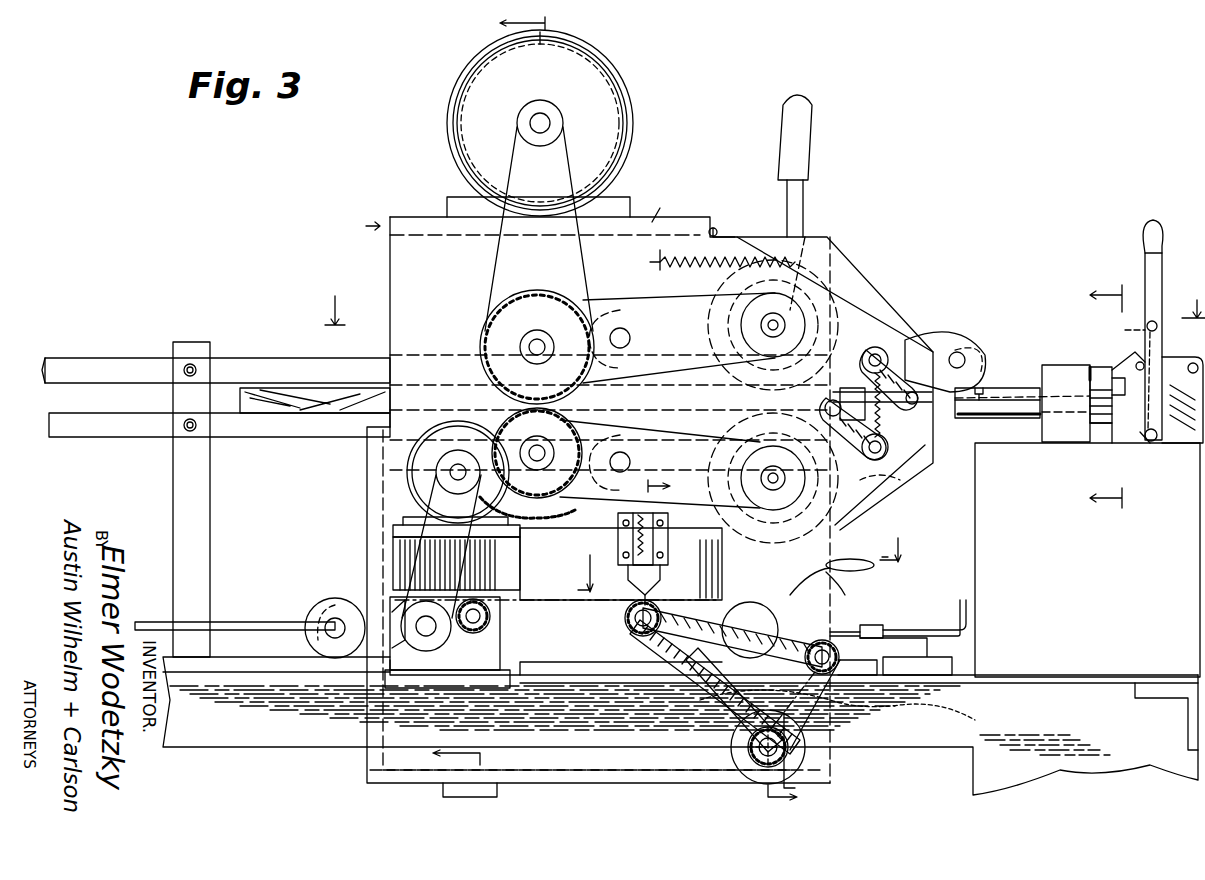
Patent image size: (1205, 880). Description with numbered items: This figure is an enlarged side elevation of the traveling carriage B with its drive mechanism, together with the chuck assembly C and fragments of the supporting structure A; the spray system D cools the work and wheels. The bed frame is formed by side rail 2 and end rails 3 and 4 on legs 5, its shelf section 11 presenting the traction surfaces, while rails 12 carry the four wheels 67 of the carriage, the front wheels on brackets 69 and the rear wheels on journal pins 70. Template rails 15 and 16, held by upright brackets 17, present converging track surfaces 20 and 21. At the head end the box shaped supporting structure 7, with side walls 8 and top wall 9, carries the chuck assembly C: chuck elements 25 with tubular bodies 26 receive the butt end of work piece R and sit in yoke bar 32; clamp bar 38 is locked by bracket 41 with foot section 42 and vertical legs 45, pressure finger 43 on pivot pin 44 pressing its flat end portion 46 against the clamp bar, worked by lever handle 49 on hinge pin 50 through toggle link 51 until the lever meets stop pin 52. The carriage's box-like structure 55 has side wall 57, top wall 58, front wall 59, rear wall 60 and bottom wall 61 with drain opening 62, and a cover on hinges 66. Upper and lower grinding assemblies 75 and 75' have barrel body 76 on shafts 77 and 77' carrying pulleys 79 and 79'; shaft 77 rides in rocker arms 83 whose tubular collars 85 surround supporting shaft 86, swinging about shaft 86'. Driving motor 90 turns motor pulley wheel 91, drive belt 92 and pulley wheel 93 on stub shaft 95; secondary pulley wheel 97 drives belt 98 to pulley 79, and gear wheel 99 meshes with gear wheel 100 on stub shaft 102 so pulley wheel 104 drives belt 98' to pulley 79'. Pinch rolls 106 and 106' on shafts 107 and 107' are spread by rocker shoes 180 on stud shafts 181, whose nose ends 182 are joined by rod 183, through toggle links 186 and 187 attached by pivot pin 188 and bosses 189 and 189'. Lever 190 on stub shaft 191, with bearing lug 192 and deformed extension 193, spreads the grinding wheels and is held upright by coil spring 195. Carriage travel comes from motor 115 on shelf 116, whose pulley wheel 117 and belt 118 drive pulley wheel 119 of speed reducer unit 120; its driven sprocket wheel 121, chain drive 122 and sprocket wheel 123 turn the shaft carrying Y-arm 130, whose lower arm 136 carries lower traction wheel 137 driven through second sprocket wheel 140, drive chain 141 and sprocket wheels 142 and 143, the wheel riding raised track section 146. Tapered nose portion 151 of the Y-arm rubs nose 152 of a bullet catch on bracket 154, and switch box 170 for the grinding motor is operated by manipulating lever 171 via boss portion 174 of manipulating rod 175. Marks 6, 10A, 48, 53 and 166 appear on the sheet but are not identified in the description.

The side rail 2 is at (318, 745).
The end rail 3 is at (1185, 730).
The end rail 4 is at (489, 394).
The legs 5 is at (975, 776).
The section line 6 is at (759, 306).
The box shaped supporting structure 7 is at (1110, 625).
The vertical side walls 8 is at (975, 568).
The horizontal top wall 9 is at (1015, 450).
The section line 10A is at (741, 640).
The shelf section 11 is at (238, 690).
The rails 12 is at (272, 645).
The template rail 15 is at (115, 358).
The template rail 16 is at (128, 407).
The upright brackets 17 is at (196, 345).
The track surface 20 is at (325, 360).
The track surface 21 is at (288, 435).
The chuck element 25 is at (995, 388).
The tubular body 26 is at (988, 420).
The yoke bar 32 is at (1055, 372).
The clamp bar 38 is at (1105, 370).
The bracket 41 is at (1163, 455).
The foot section 42 is at (1192, 450).
The pressure finger 43 is at (1170, 357).
The pivot pin 44 is at (1190, 375).
The vertical legs 45 is at (1178, 445).
The flat end portion 46 is at (1088, 360).
The shaft 48 is at (338, 635).
The lever handle 49 is at (1162, 262).
The hinge pin 50 is at (1146, 445).
The toggle link 51 is at (1130, 374).
The stop pin 52 is at (1130, 400).
The support 53 is at (1100, 455).
The box-like structure 55 is at (362, 481).
The side wall 57 is at (661, 363).
The top wall 58 is at (663, 206).
The front wall 59 is at (368, 493).
The rear wall 60 is at (940, 457).
The bottom wall 61 is at (648, 782).
The drain opening 62 is at (520, 780).
The hinges 66 is at (715, 228).
The wheels 67 is at (330, 600).
The brackets 69 is at (365, 575).
The journal pin 70 is at (735, 635).
The upper grinding assembly 75 is at (835, 282).
The lower grinding assembly 75' is at (819, 468).
The barrel body 76 is at (805, 240).
The shaft 77 is at (773, 321).
The shaft 77' is at (773, 481).
The driving pulley 79 is at (766, 318).
The pulley wheel 79' is at (771, 491).
The rocker arms 83 is at (680, 300).
The tubular collar 85 is at (605, 491).
The supporting shaft 86 is at (624, 339).
The shaft 86' is at (626, 462).
The driving motor 90 is at (540, 123).
The motor pulley wheel 91 is at (552, 122).
The drive belt 92 is at (568, 152).
The pulley wheel 93 is at (520, 300).
The stub shaft 95 is at (548, 345).
The secondary pulley wheel 97 is at (480, 337).
The belt 98 is at (679, 325).
The belt 98' is at (660, 451).
The gear wheel 99 is at (480, 308).
The gear wheel 100 is at (560, 515).
The stub shaft 102 is at (540, 437).
The pulley wheel 104 is at (560, 487).
The pinch roll 106 is at (963, 321).
The pinch roll 106' is at (945, 506).
The shaft 107 is at (883, 314).
The shaft 107' is at (920, 457).
The motor 115 is at (458, 472).
The shelf 116 is at (393, 532).
The pulley wheel 117 is at (440, 480).
The belt 118 is at (460, 560).
The pulley wheel 119 is at (394, 612).
The speed reducer unit 120 is at (447, 642).
The driven sprocket wheel 121 is at (490, 616).
The chain drive 122 is at (550, 588).
The sprocket wheel 123 is at (625, 615).
The Y-arm 130 is at (683, 695).
The lower arm 136 is at (700, 718).
The lower traction wheel 137 is at (805, 760).
The second sprocket wheel 140 is at (635, 630).
The drive chain 141 is at (830, 745).
The sprocket wheel 142 is at (755, 758).
The sprocket wheel 143 is at (835, 640).
The raised track section 146 is at (855, 700).
The tapered nose portion 151 is at (660, 588).
The nose 152 is at (663, 578).
The bracket 154 is at (618, 545).
The lever 166 is at (850, 572).
The switch box 170 is at (955, 668).
The manipulating lever 171 is at (932, 650).
The boss portion 174 is at (885, 620).
The manipulating rod 175 is at (250, 607).
The rocker shoes 180 is at (950, 345).
The stud shafts 181 is at (935, 345).
The nose ends 182 is at (975, 340).
The transversely extending rod 183 is at (975, 358).
The toggle link 186 is at (905, 352).
The toggle link 187 is at (915, 515).
The pivot pin 188 is at (835, 388).
The tubular boss 189 is at (914, 310).
The boss portion 189' is at (947, 489).
The manually manipulated lever 190 is at (812, 130).
The stub shaft 191 is at (760, 405).
The bearing lug 192 is at (692, 337).
The deformed extension 193 is at (740, 460).
The coil spring 195 is at (730, 260).
The supporting structure A is at (215, 752).
The traveling carriage B is at (362, 226).
The chuck assembly C is at (1024, 380).
The spray system D is at (931, 535).
The work piece R is at (262, 388).